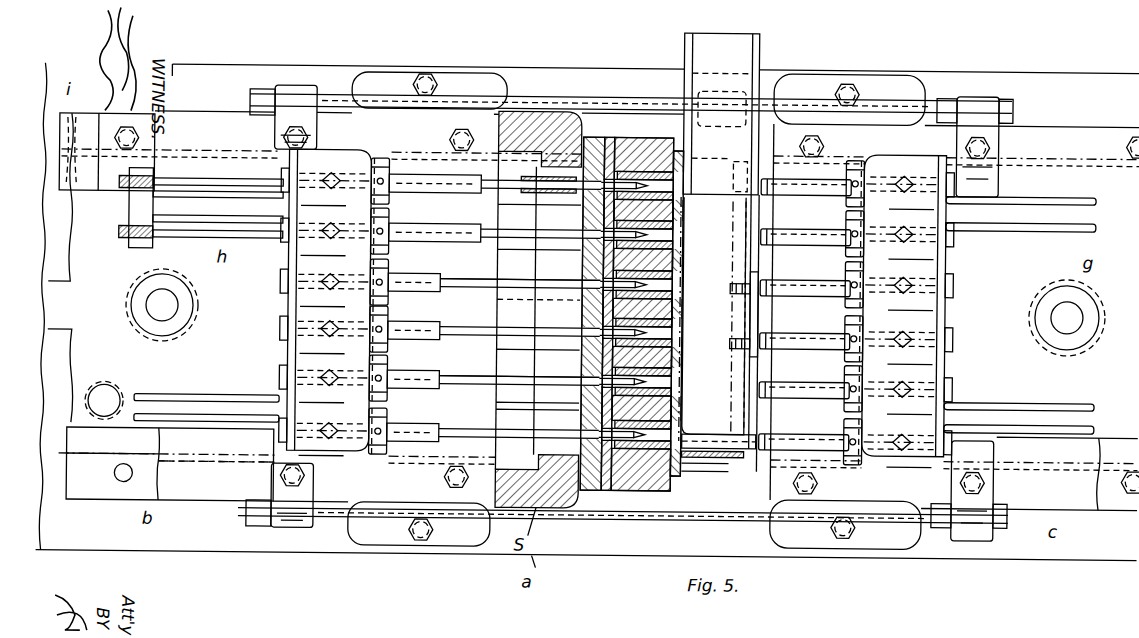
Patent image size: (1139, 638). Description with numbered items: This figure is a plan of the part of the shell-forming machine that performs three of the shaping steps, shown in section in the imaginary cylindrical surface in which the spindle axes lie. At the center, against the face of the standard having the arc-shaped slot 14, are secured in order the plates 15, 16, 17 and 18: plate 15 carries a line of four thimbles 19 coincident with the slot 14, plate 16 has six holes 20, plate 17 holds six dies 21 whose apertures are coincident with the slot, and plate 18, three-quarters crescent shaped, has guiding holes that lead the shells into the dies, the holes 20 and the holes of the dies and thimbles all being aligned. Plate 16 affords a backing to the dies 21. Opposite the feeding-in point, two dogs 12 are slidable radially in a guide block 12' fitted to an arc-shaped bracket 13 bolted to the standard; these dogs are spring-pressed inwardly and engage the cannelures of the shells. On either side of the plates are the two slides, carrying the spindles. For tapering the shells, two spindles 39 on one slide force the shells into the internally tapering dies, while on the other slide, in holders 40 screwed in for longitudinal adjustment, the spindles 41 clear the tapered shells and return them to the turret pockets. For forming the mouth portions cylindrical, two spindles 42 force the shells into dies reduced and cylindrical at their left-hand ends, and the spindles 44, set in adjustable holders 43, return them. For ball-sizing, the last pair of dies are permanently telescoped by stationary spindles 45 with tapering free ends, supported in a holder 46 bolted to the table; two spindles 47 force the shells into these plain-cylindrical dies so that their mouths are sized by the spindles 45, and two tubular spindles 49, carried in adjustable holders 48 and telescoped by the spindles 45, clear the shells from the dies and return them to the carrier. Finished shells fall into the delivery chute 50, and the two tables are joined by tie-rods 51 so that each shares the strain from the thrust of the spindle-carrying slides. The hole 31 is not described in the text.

The dogs 12 is at (730, 315).
The guide block 12' is at (776, 317).
The arc-shaped bracket 13 is at (742, 412).
The slot 14 is at (545, 410).
The plate 15 is at (588, 498).
The plate 16 is at (606, 498).
The plate 17 is at (640, 498).
The plate 18 is at (676, 478).
The thimbles 19 is at (595, 378).
The holes 20 is at (592, 257).
The dies 21 is at (680, 328).
The hole 31 is at (111, 394).
The spindles 39 is at (822, 397).
The holders 40 is at (425, 391).
The spindles 41 is at (464, 390).
The spindles 42 is at (834, 295).
The holders 43 is at (426, 294).
The spindles 44 is at (487, 292).
The spindles 45 is at (572, 194).
The holder 46 is at (130, 250).
The spindles 47 is at (818, 194).
The holders 48 is at (437, 195).
The tubular spindles 49 is at (516, 238).
The delivery chute 50 is at (721, 114).
The tie-rods 51 is at (628, 98).